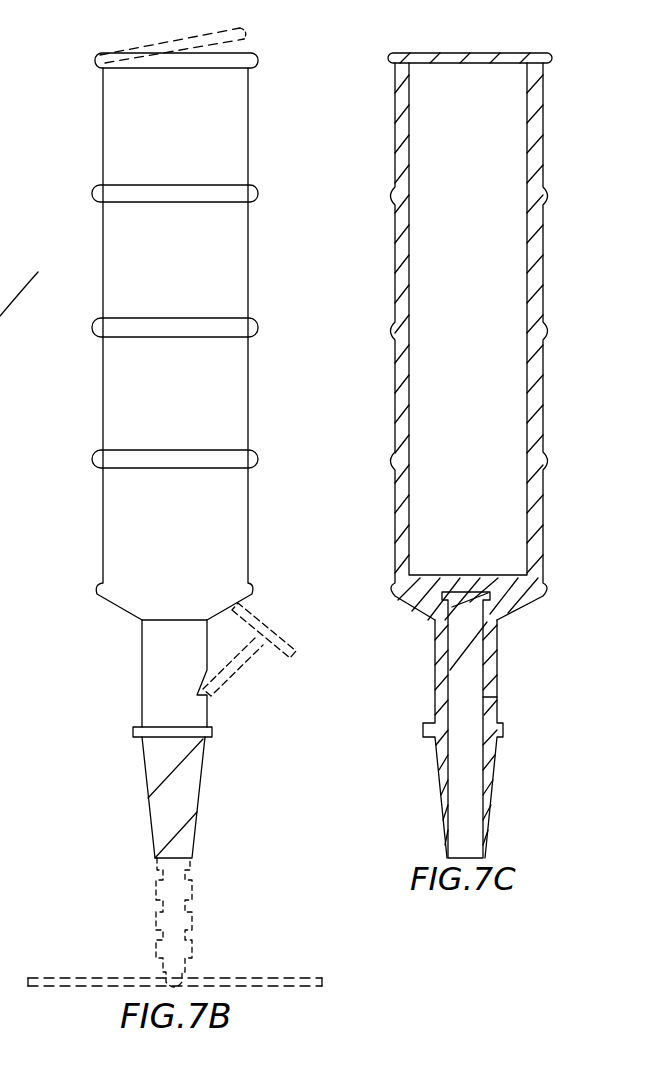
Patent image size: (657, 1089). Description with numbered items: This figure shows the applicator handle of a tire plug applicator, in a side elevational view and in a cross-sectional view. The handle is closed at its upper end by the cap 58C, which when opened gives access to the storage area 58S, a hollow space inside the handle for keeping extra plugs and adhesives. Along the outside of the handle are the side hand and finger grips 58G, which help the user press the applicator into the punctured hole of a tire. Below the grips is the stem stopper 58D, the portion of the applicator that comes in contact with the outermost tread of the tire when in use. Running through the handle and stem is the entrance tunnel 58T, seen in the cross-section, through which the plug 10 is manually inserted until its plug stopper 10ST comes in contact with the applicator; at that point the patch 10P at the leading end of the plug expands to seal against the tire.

In FIG. 7B, the cap 58C is at (247, 33).
In FIG. 7B, the side hand and finger grips 58G is at (120, 193).
In FIG. 7B, the stem stopper 58D is at (133, 731).
In FIG. 7B, the plug stopper 10ST is at (277, 645).
In FIG. 7B, the plug 10 is at (218, 672).
In FIG. 7B, the patch 10P is at (238, 985).
In FIG. 7C, the storage area 58S is at (463, 283).
In FIG. 7C, the entrance tunnel 58T is at (470, 700).